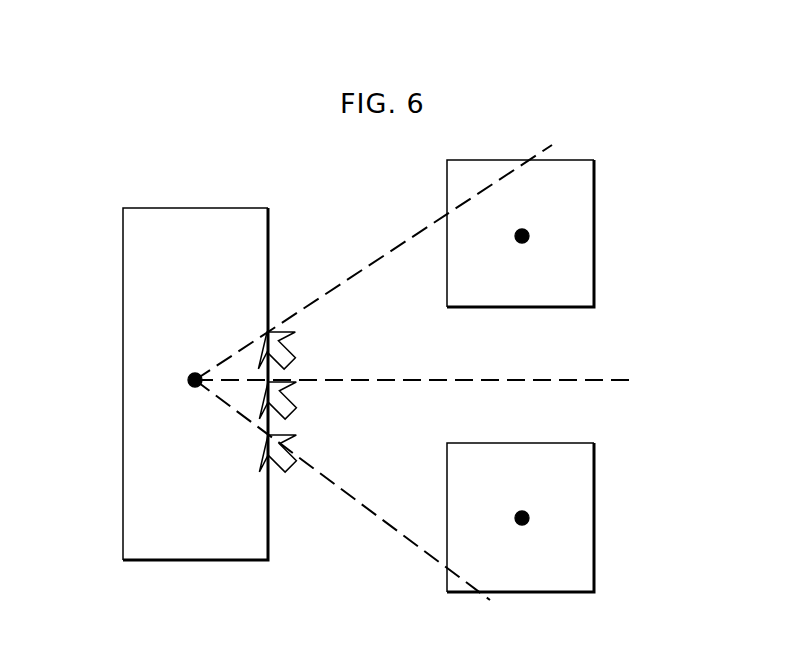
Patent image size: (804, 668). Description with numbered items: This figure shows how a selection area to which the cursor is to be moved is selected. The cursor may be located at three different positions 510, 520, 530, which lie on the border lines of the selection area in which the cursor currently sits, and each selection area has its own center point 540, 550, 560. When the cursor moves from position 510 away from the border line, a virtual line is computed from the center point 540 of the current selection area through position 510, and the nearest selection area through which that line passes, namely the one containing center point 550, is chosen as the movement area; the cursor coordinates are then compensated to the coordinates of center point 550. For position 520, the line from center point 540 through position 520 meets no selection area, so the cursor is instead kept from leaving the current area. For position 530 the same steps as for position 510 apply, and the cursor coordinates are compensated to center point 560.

The cursor position 510 is at (302, 350).
The cursor position 520 is at (305, 400).
The cursor position 530 is at (300, 453).
The center point 540 is at (193, 378).
The center point 550 is at (530, 233).
The center point 560 is at (530, 518).